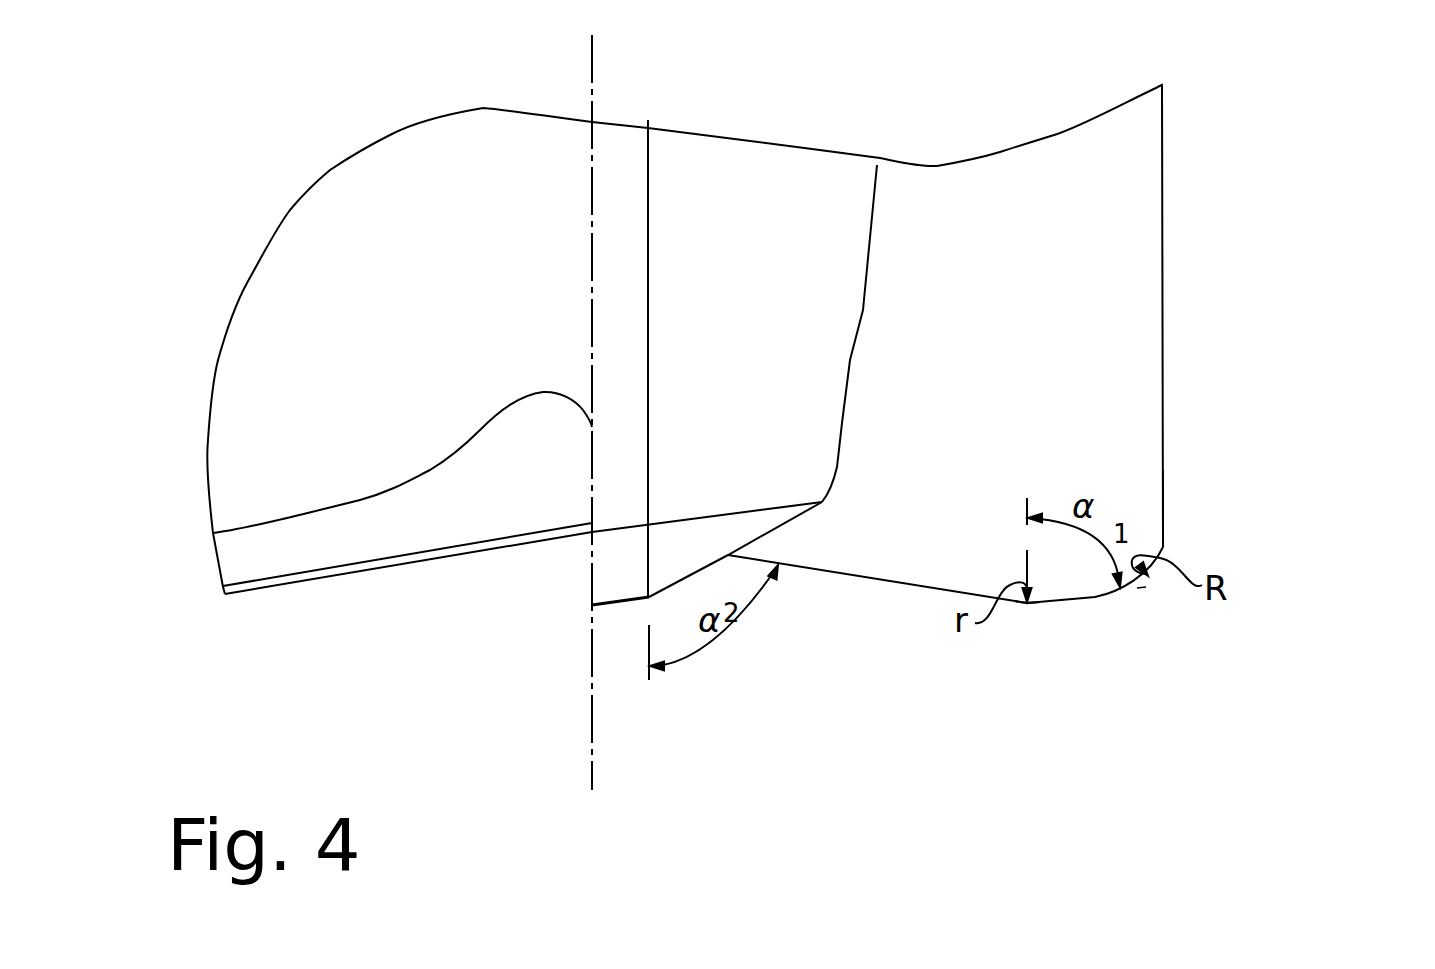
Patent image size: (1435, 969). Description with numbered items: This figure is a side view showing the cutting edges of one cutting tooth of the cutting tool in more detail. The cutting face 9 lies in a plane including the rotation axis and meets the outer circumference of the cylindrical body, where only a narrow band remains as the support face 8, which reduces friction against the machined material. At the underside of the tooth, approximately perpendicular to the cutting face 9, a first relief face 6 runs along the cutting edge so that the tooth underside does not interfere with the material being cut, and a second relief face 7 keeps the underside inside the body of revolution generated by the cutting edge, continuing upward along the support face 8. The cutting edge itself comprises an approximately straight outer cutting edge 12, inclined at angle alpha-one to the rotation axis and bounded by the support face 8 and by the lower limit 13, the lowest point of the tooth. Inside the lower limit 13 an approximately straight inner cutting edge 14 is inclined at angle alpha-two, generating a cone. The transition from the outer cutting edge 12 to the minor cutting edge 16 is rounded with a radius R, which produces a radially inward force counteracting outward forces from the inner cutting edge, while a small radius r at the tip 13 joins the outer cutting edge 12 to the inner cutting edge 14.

The first relief face 6 is at (351, 570).
The second relief face 7 is at (690, 543).
The support face 8 is at (663, 358).
The cutting face 9 is at (578, 207).
The outer cutting edge 12 is at (1096, 614).
The lower limit 13 is at (1027, 620).
The inner cutting edge 14 is at (899, 598).
The minor cutting edge 16 is at (1168, 515).